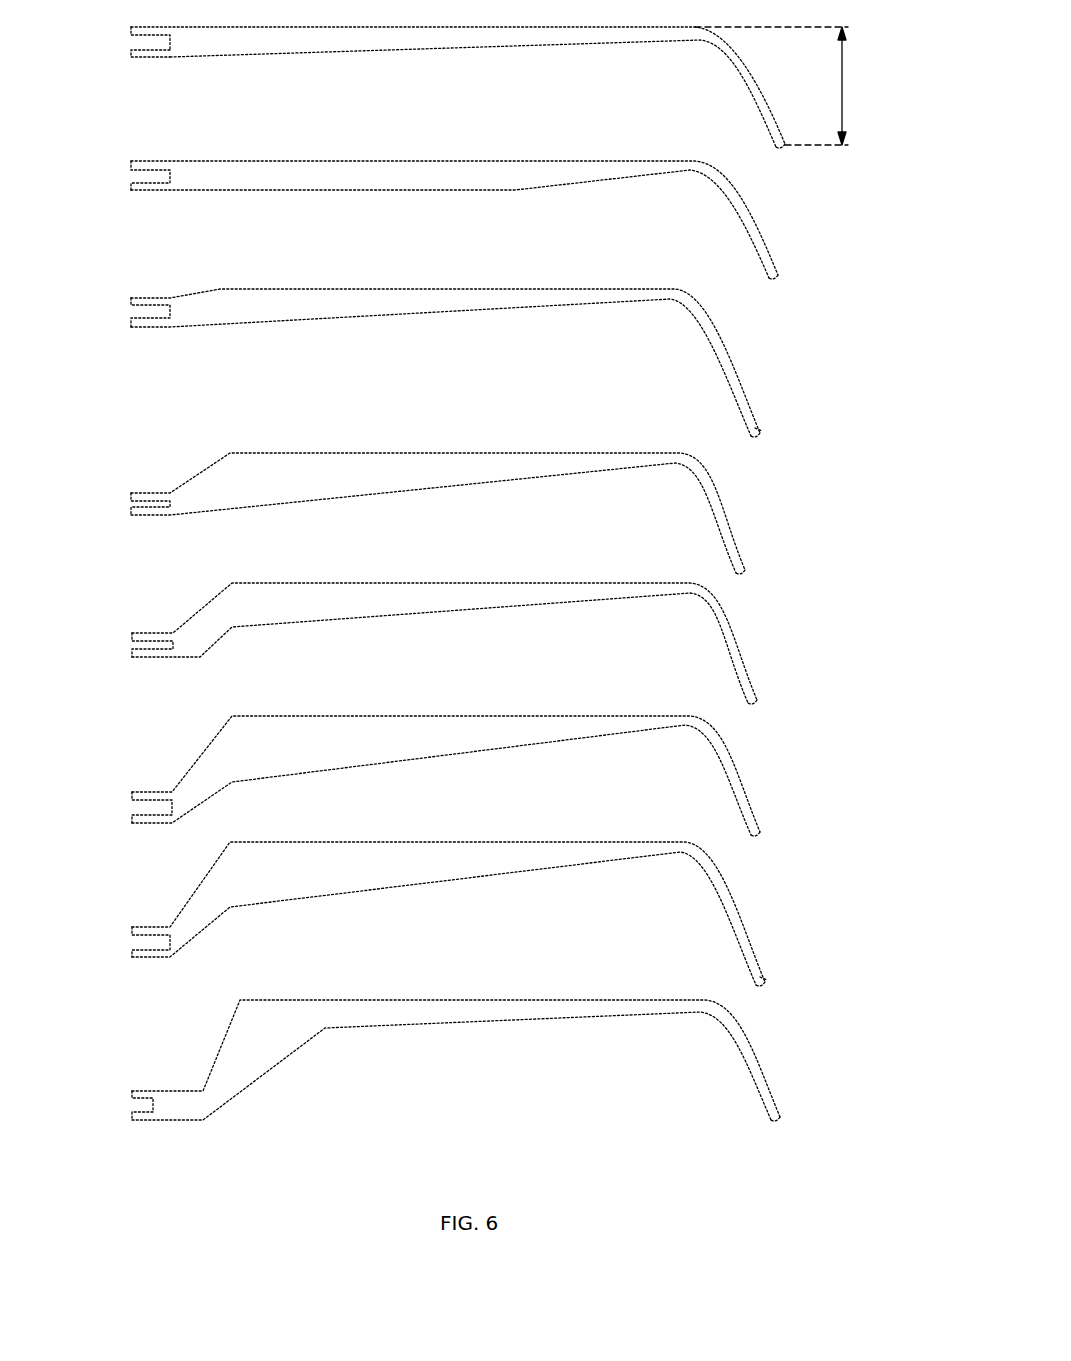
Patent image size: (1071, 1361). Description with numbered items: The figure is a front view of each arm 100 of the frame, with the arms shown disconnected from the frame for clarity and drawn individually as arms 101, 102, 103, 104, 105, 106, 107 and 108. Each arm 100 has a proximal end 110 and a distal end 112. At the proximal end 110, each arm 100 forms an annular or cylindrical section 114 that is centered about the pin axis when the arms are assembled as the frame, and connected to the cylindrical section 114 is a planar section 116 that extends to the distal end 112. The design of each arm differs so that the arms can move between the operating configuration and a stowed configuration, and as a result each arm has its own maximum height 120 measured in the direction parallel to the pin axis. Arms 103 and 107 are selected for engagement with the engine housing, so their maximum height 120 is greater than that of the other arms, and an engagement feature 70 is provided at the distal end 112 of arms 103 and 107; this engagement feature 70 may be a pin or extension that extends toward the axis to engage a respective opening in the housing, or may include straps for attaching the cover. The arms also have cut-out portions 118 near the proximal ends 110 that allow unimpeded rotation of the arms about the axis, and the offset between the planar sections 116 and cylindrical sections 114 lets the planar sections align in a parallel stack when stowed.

The engagement feature 70 is at (745, 433).
The arm 100 is at (148, 1151).
The arm 101 is at (472, 119).
The arm 102 is at (260, 188).
The arm 103 is at (261, 316).
The arm 104 is at (286, 488).
The arm 105 is at (286, 615).
The arm 106 is at (286, 755).
The arm 107 is at (286, 883).
The arm 108 is at (286, 1041).
The proximal end 110 is at (130, 29).
The distal end 112 is at (786, 147).
The cylindrical section 114 is at (152, 58).
The planar section 116 is at (297, 52).
The cut-out portion 118 is at (174, 1045).
The maximum height 120 is at (845, 88).